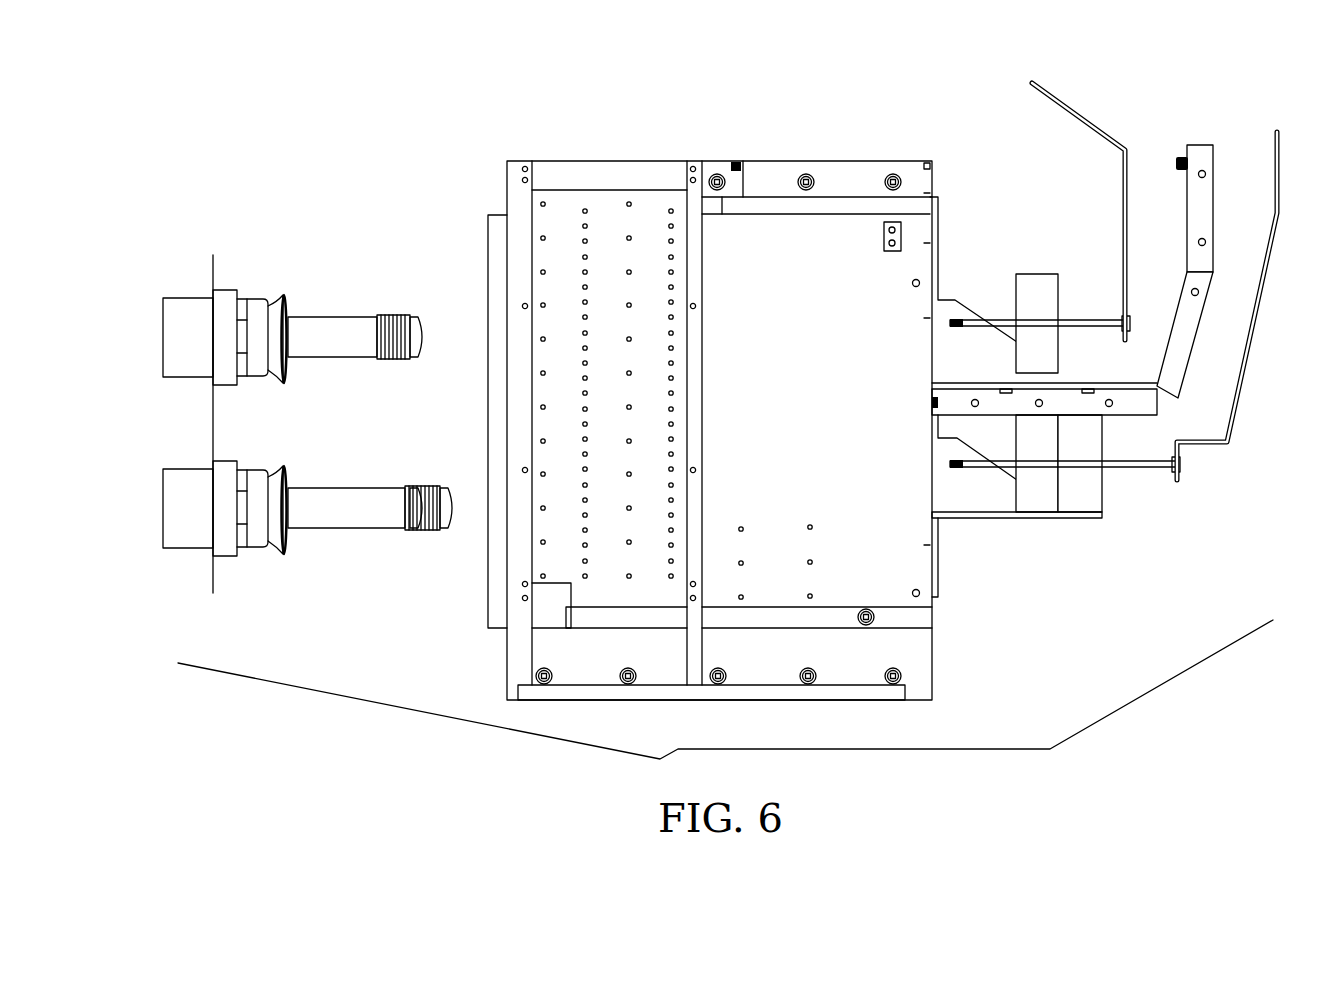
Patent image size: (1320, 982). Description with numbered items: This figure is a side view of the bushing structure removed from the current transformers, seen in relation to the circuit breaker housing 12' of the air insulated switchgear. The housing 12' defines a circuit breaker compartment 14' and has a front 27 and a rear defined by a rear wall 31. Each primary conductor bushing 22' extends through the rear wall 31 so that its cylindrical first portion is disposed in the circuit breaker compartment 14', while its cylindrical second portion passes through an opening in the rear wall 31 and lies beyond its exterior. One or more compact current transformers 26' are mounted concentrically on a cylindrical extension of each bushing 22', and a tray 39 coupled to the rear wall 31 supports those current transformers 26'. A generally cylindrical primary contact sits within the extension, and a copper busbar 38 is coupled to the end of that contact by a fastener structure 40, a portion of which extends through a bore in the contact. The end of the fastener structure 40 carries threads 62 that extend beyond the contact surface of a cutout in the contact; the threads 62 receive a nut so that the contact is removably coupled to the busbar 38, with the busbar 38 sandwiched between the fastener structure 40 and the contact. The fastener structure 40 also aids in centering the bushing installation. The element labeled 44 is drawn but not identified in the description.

The circuit breaker housing 12' is at (817, 154).
The circuit breaker compartment 14' is at (816, 396).
The primary conductor bushing 22' is at (307, 407).
The compact current transformer 26' is at (1057, 391).
The front 27 is at (507, 190).
The rear wall 31 is at (938, 576).
The copper busbar 38 is at (1080, 112).
The tray 39 is at (982, 508).
The fastener structure 40 is at (1095, 320).
The panel wall 44 is at (213, 256).
The threads 62 is at (962, 318).